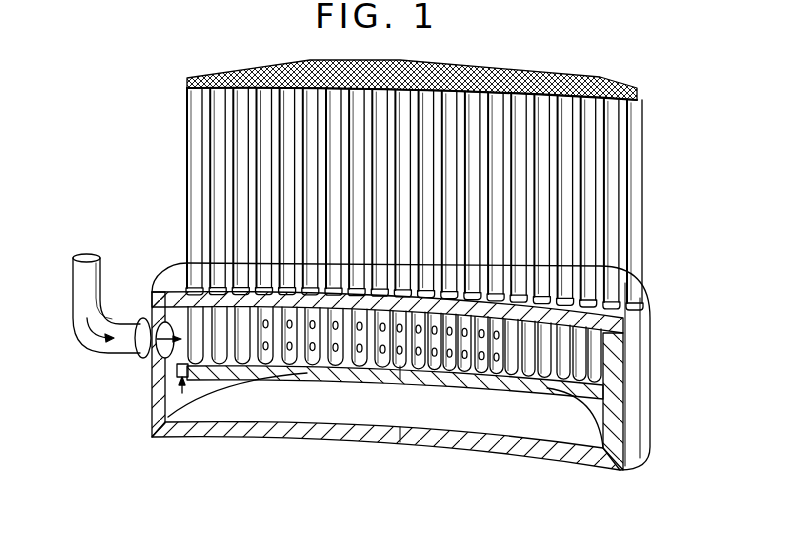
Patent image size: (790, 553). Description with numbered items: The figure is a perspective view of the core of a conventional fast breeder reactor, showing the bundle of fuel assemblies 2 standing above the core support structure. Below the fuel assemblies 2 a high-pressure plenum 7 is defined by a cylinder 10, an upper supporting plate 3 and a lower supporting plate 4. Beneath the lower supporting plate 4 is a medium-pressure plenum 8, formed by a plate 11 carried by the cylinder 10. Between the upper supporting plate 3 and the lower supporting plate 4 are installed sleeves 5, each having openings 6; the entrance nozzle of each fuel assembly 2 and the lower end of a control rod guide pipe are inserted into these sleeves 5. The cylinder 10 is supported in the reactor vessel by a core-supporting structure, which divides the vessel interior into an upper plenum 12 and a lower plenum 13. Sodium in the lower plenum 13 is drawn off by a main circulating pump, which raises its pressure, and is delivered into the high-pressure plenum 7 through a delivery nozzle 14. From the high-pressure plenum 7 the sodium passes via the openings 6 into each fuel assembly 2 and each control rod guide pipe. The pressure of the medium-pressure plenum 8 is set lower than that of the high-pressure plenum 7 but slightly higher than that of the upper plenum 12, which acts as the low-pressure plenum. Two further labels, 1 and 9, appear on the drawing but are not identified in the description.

The top spacer mesh of tube bundle 1 is at (612, 80).
The fuel assembly 2 is at (562, 205).
The upper supporting plate 3 is at (176, 297).
The lower supporting plate 4 is at (543, 390).
The sleeve 5 is at (433, 365).
The openings 6 is at (377, 363).
The high-pressure plenum 7 is at (227, 357).
The medium-pressure plenum 8 is at (332, 398).
The drain valve 9 is at (178, 381).
The cylinder 10 is at (617, 447).
The plate 11 is at (279, 432).
The upper plenum 12 is at (212, 53).
The lower plenum 13 is at (114, 427).
The delivery nozzle 14 is at (102, 346).